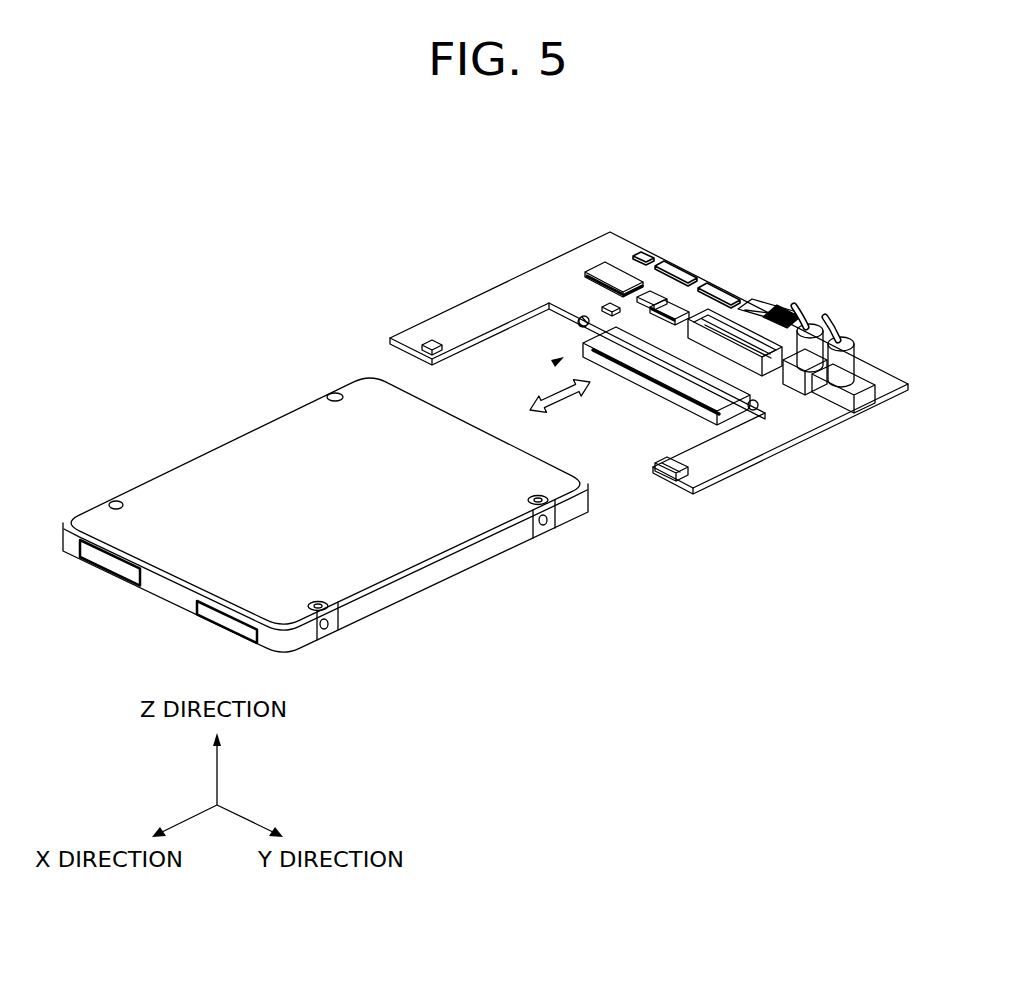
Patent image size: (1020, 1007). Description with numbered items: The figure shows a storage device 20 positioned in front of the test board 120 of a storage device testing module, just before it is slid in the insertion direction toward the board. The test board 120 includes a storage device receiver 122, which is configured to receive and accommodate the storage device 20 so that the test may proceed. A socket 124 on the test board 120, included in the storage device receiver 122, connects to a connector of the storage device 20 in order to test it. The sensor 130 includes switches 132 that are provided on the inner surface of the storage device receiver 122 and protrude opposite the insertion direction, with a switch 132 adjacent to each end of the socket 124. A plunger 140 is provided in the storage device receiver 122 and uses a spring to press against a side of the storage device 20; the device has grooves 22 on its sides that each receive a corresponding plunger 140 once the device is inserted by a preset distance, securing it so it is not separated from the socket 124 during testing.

The storage device 20 is at (445, 572).
The groove 22 is at (342, 631).
The test board 120 is at (470, 308).
The storage device receiver 122 is at (553, 364).
The socket 124 is at (660, 368).
The sensor 130 is at (598, 272).
The switch 132 is at (579, 318).
The plunger 140 is at (665, 478).